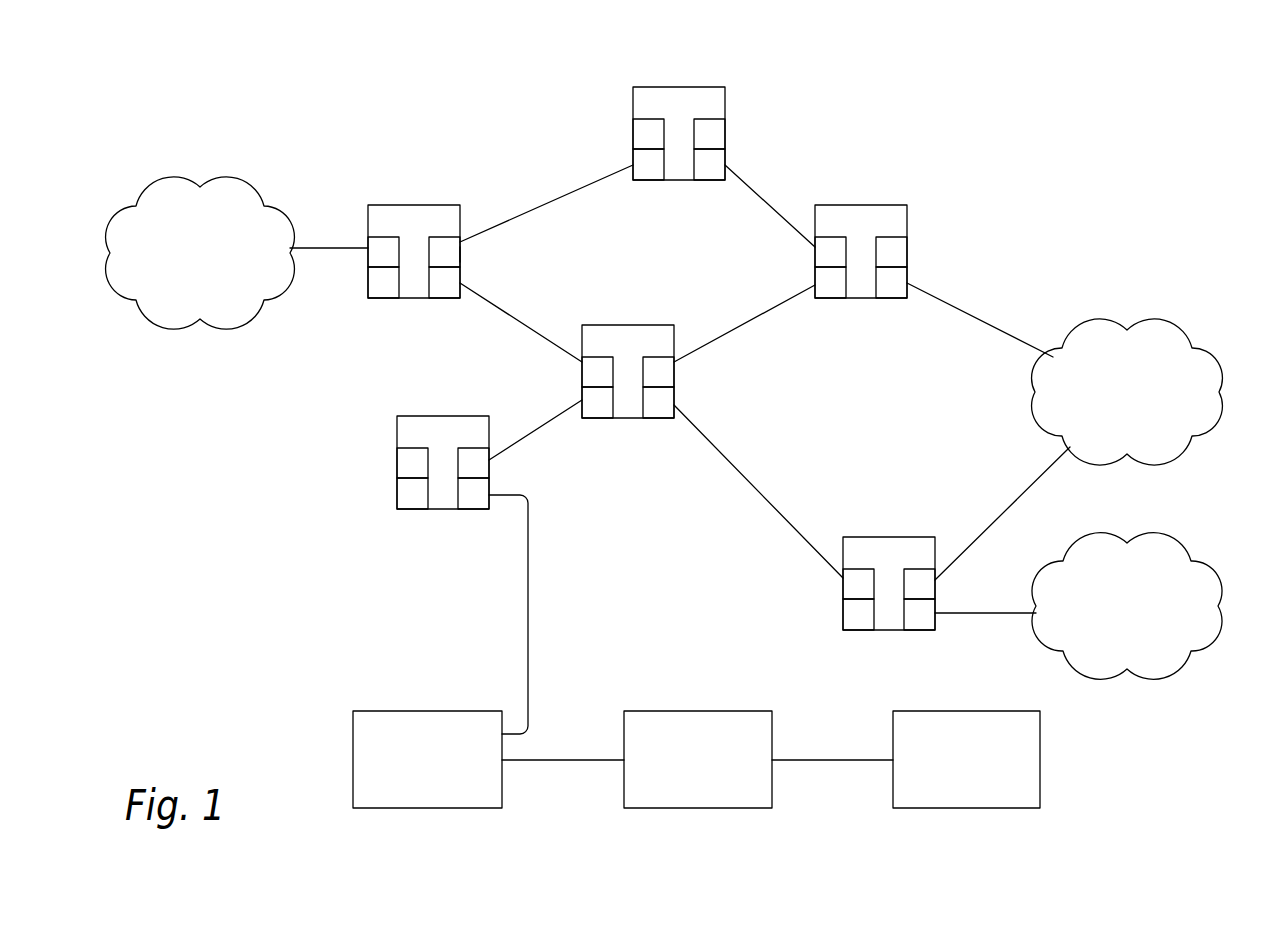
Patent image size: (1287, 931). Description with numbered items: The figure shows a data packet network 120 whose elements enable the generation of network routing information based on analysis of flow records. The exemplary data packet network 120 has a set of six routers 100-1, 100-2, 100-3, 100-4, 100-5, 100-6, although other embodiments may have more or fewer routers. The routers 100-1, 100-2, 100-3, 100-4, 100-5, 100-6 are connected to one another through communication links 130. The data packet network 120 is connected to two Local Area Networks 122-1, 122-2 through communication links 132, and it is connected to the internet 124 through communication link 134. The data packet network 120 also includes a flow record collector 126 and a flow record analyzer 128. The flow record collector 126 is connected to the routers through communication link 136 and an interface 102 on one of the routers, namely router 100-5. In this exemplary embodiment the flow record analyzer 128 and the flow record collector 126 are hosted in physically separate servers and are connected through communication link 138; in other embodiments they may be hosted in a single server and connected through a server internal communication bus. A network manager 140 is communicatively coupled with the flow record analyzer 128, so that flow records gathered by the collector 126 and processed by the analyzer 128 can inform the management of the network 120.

The router 100-1 is at (414, 205).
The router 100-2 is at (725, 99).
The router 100-3 is at (872, 205).
The router 100-4 is at (655, 325).
The router 100-5 is at (445, 416).
The router 100-6 is at (879, 537).
The interface 102 is at (460, 257).
The data packet network 120 is at (1140, 73).
The Local Area Network 122-1 is at (177, 190).
The Local Area Network 122-2 is at (1152, 545).
The internet 124 is at (1133, 332).
The flow record collector 126 is at (385, 711).
The flow record analyzer 128 is at (736, 711).
The communication link 130 is at (538, 200).
The communication link 132 is at (323, 243).
The communication link 134 is at (975, 318).
The communication link 136 is at (529, 635).
The communication link 138 is at (580, 760).
The network manager 140 is at (985, 711).